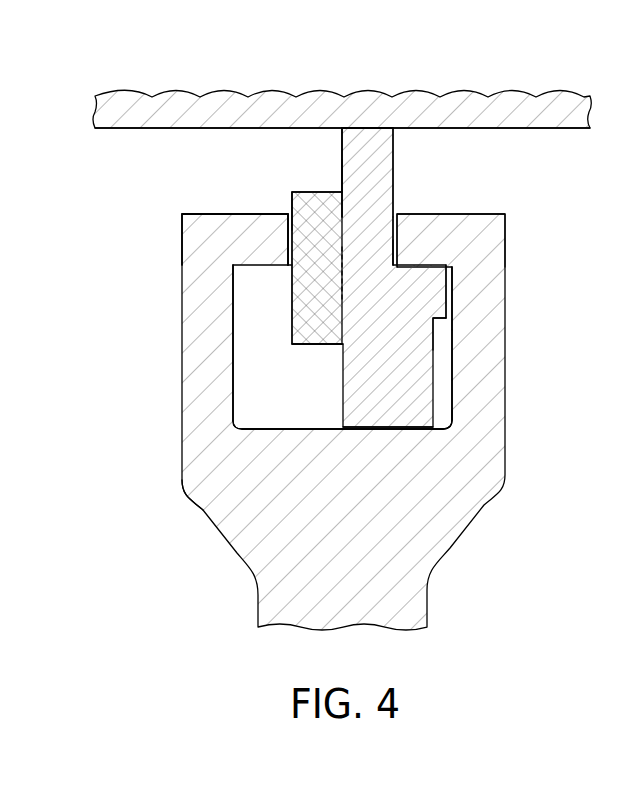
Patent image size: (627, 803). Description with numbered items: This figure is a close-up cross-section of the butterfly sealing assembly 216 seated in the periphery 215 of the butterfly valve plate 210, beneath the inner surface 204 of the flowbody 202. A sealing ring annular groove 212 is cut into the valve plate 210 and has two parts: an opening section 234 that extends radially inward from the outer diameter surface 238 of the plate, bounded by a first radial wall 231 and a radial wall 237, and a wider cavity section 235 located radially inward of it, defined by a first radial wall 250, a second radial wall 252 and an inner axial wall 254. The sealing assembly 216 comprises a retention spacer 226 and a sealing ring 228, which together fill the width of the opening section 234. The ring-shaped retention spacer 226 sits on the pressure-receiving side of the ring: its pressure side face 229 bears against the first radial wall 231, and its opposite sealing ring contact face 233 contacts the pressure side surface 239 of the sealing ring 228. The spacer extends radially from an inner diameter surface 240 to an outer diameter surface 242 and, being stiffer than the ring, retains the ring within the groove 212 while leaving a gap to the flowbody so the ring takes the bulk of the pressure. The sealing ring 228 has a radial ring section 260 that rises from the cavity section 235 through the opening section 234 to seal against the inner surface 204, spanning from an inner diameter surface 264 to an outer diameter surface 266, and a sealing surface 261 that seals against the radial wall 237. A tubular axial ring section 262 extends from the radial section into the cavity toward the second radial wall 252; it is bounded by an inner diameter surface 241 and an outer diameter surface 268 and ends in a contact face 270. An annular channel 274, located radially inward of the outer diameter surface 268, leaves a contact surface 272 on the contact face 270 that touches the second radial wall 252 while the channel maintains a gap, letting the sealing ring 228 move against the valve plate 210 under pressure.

The flowbody 202 is at (534, 102).
The inner surface of the flowbody 204 is at (537, 128).
The butterfly valve plate 210 is at (447, 533).
The sealing ring annular groove 212 is at (256, 382).
The periphery 215 is at (193, 214).
The butterfly sealing assembly 216 is at (138, 248).
The retention spacer 226 is at (332, 296).
The sealing ring 228 is at (342, 143).
The pressure side face 229 is at (289, 266).
The first radial wall 231 is at (292, 216).
The sealing ring contact face 233 is at (343, 200).
The opening section 234 is at (288, 237).
The cavity section 235 is at (258, 414).
The radial wall 237 is at (397, 217).
The outer diameter surface 238 is at (205, 213).
The pressure side surface 239 is at (342, 168).
The inner diameter surface 240 is at (334, 347).
The inner diameter surface 241 is at (440, 320).
The outer diameter surface 242 is at (325, 236).
The first radial wall 250 is at (235, 311).
The second radial wall 252 is at (440, 386).
The inner axial wall 254 is at (335, 428).
The radial ring section 260 is at (393, 143).
The sealing surface 261 is at (395, 263).
The axial ring section 262 is at (423, 410).
The inner diameter surface 264 is at (388, 429).
The outer diameter surface 266 is at (373, 126).
The outer diameter surface 268 is at (445, 267).
The contact face 270 is at (440, 290).
The contact surface 272 is at (452, 308).
The annular channel 274 is at (440, 360).